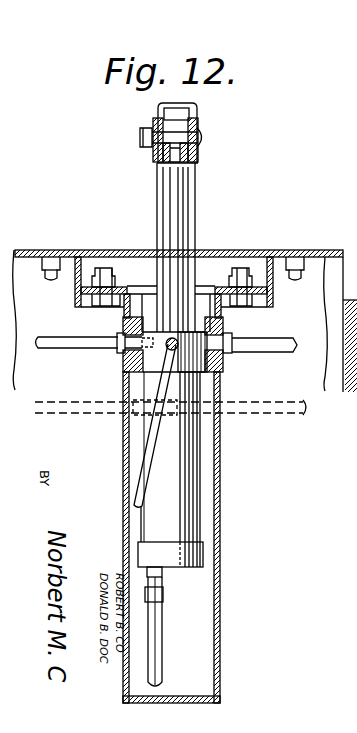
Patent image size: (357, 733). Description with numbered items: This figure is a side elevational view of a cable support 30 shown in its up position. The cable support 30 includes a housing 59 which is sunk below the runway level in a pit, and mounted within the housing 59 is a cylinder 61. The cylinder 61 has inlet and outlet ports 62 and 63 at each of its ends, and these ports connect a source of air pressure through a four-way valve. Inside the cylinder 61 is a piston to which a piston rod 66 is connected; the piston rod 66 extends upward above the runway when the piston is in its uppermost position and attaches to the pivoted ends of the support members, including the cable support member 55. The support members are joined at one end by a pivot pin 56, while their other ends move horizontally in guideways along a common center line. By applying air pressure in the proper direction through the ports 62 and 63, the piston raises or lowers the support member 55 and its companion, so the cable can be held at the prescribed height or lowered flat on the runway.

The pivot pin 56 is at (206, 137).
The cable support member 55 is at (157, 189).
The cable support 30 is at (203, 194).
The piston rod 66 is at (172, 224).
The inlet and outlet port 62 is at (168, 348).
The housing 59 is at (220, 438).
The cylinder 61 is at (182, 506).
The inlet and outlet port 63 is at (160, 578).